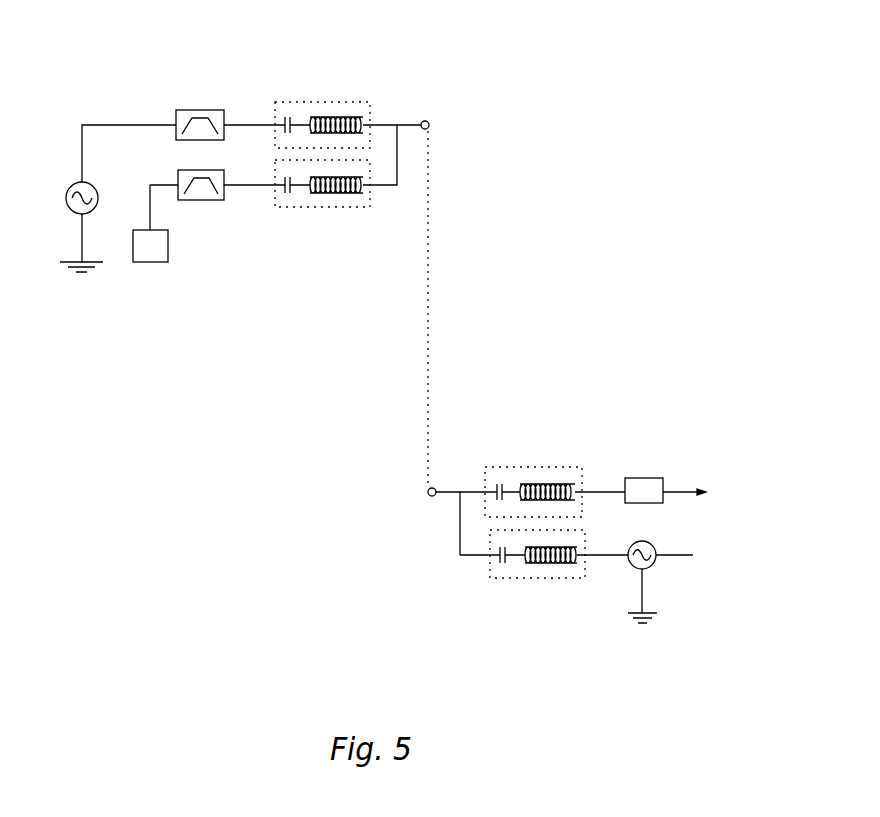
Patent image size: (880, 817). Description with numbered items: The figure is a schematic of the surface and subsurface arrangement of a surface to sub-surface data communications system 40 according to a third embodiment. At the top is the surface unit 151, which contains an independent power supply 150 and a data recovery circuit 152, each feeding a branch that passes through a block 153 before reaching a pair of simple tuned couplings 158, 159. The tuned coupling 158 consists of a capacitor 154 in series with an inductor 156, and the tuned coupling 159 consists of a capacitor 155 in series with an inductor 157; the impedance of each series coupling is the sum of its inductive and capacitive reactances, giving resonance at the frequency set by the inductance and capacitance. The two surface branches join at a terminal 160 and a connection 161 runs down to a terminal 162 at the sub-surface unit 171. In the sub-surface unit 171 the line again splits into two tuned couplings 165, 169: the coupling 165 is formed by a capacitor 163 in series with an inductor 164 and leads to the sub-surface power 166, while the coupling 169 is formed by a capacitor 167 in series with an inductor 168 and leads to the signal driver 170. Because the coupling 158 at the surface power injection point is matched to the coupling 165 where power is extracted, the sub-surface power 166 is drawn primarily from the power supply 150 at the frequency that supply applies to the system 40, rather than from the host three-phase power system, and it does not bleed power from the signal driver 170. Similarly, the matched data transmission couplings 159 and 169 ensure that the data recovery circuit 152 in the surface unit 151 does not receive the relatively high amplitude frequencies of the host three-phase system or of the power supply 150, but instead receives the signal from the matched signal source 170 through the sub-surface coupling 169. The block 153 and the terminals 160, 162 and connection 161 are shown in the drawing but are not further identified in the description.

The system 40 is at (585, 232).
The power supply 150 is at (62, 208).
The surface unit 151 is at (117, 75).
The data recovery circuit 152 is at (158, 265).
The band-pass filters 153 is at (237, 94).
The capacitor 154 is at (283, 105).
The capacitor 155 is at (285, 205).
The inductor 156 is at (343, 105).
The inductor 157 is at (345, 205).
The tuned coupling 158 is at (370, 92).
The tuned coupling 159 is at (370, 212).
The terminal 160 is at (398, 121).
The connection 161 is at (433, 308).
The terminal 162 is at (452, 497).
The capacitor 163 is at (493, 470).
The inductor 164 is at (551, 470).
The tuned coupling 165 is at (580, 462).
The sub-surface power 166 is at (652, 473).
The capacitor 167 is at (503, 578).
The inductor 168 is at (562, 565).
The tuned coupling 169 is at (582, 583).
The signal driver 170 is at (657, 570).
The sub-surface unit 171 is at (735, 555).